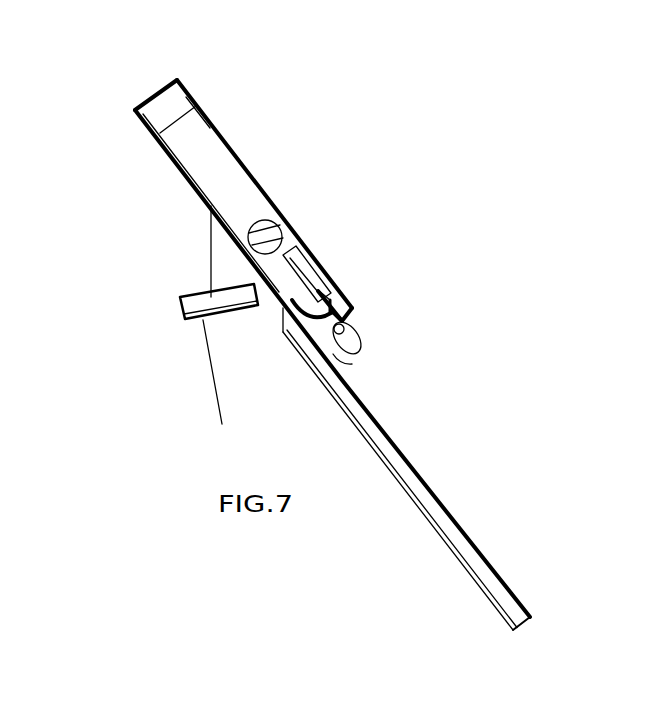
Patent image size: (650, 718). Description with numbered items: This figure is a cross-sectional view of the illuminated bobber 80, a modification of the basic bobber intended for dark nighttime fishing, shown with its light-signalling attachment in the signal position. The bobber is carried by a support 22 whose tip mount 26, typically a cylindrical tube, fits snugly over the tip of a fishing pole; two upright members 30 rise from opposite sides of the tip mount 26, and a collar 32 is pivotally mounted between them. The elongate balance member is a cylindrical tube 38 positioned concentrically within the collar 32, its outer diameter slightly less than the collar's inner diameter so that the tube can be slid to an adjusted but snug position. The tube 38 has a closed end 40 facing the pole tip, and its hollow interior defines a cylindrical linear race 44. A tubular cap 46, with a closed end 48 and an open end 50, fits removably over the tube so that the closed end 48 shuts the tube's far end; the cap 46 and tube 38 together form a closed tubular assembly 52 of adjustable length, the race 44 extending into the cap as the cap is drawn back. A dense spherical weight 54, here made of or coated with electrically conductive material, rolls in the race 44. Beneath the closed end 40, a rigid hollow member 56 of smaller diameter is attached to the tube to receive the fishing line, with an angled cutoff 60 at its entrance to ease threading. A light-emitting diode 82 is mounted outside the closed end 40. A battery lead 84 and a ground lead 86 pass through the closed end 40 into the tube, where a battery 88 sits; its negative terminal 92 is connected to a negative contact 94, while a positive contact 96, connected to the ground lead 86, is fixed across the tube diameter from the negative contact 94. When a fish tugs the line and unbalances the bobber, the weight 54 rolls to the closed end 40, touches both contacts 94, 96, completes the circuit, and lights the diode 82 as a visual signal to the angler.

The support 22 is at (203, 198).
The tip mount 26 is at (231, 385).
The upright members 30 is at (210, 262).
The collar 32 is at (250, 177).
The tube 38 is at (230, 150).
The closed end 40 is at (343, 327).
The race 44 is at (262, 184).
The cap 46 is at (146, 124).
The closed end 48 is at (157, 93).
The open end 50 is at (199, 194).
The tubular assembly 52 is at (167, 152).
The weight 54 is at (281, 219).
The hollow member 56 is at (404, 451).
The angled cutoff 60 is at (282, 316).
The illuminated bobber 80 is at (433, 392).
The light-emitting diode 82 is at (364, 344).
The battery lead 84 is at (347, 297).
The ground lead 86 is at (340, 360).
The battery 88 is at (327, 267).
The negative terminal 92 is at (305, 243).
The negative contact 94 is at (302, 228).
The positive contact 96 is at (338, 268).